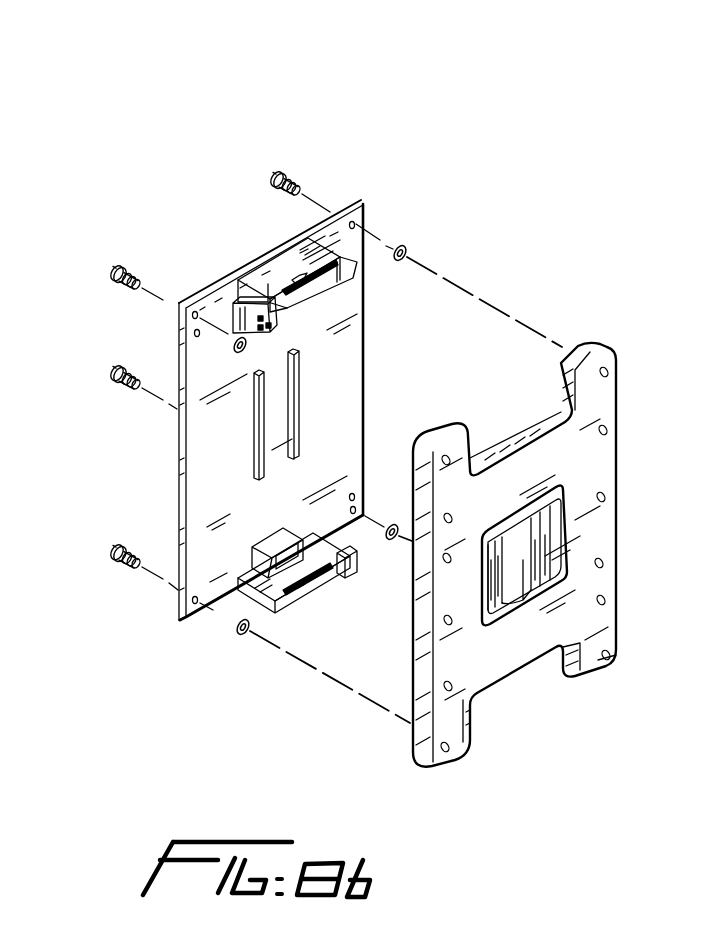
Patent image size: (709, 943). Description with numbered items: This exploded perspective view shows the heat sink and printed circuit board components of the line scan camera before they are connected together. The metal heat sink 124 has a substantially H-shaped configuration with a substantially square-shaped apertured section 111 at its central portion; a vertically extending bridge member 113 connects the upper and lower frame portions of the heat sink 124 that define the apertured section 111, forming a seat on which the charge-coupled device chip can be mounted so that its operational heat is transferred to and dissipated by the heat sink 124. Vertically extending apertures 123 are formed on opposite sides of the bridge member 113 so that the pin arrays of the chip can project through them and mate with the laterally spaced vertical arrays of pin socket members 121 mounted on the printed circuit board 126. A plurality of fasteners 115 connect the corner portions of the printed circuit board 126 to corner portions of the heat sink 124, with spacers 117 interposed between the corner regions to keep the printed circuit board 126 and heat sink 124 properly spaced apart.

The apertured section 111 is at (595, 470).
The bridge member 113 is at (515, 523).
The fasteners 115 is at (119, 266).
The spacers 117 is at (400, 244).
The pin socket members 121 is at (254, 416).
The apertures 123 is at (483, 582).
The heat sink 124 is at (605, 523).
The printed circuit board 126 is at (200, 467).